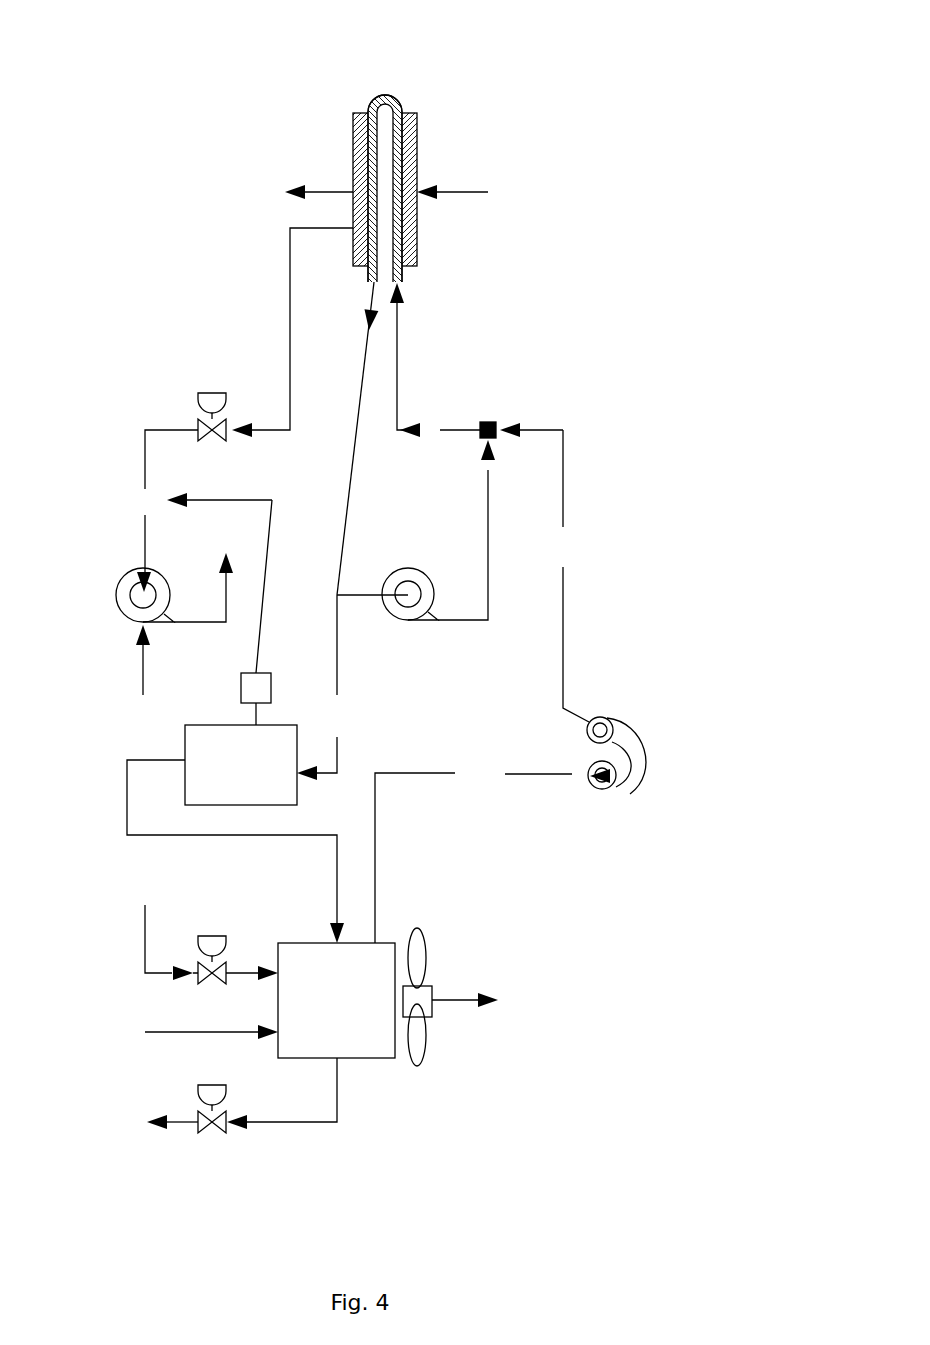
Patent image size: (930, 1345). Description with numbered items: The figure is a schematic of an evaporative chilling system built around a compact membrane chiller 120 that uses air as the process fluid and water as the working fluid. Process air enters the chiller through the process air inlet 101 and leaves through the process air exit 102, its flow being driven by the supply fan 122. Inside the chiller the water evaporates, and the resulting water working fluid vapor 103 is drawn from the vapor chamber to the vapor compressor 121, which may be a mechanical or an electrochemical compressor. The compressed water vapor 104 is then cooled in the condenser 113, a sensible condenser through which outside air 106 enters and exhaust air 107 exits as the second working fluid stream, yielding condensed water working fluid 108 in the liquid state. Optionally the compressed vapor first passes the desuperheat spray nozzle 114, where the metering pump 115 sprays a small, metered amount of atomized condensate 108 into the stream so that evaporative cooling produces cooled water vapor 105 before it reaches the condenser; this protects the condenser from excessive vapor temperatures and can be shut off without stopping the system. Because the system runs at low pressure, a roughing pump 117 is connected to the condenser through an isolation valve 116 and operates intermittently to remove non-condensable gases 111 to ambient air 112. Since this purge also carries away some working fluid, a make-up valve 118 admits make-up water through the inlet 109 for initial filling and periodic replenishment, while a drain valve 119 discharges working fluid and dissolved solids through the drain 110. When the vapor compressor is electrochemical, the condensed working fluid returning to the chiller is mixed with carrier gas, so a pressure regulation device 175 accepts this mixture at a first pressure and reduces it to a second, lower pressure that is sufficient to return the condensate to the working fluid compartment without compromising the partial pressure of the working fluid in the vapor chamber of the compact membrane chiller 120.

The process air inlet 101 is at (187, 1032).
The process air exit 102 is at (487, 1000).
The water working fluid vapor 103 is at (492, 854).
The compressed water vapor 104 is at (544, 572).
The cooled water vapor 105 is at (423, 374).
The outside air 106 is at (475, 192).
The exhaust air 107 is at (295, 192).
The condensed water working fluid 108 is at (337, 531).
The inlet 109 is at (158, 926).
The drain 110 is at (147, 1122).
The non-condensable gases 111 is at (198, 511).
The ambient air 112 is at (210, 571).
The condenser 113 is at (385, 92).
The desuperheat spray nozzle 114 is at (490, 421).
The metering pump 115 is at (410, 568).
The isolation valve 116 is at (214, 392).
The roughing pump 117 is at (141, 674).
The make-up valve 118 is at (214, 935).
The drain valve 119 is at (215, 1135).
The compact membrane chiller 120 is at (336, 1000).
The vapor compressor 121 is at (628, 818).
The supply fan 122 is at (417, 1067).
The pressure regulation device 175 is at (241, 739).